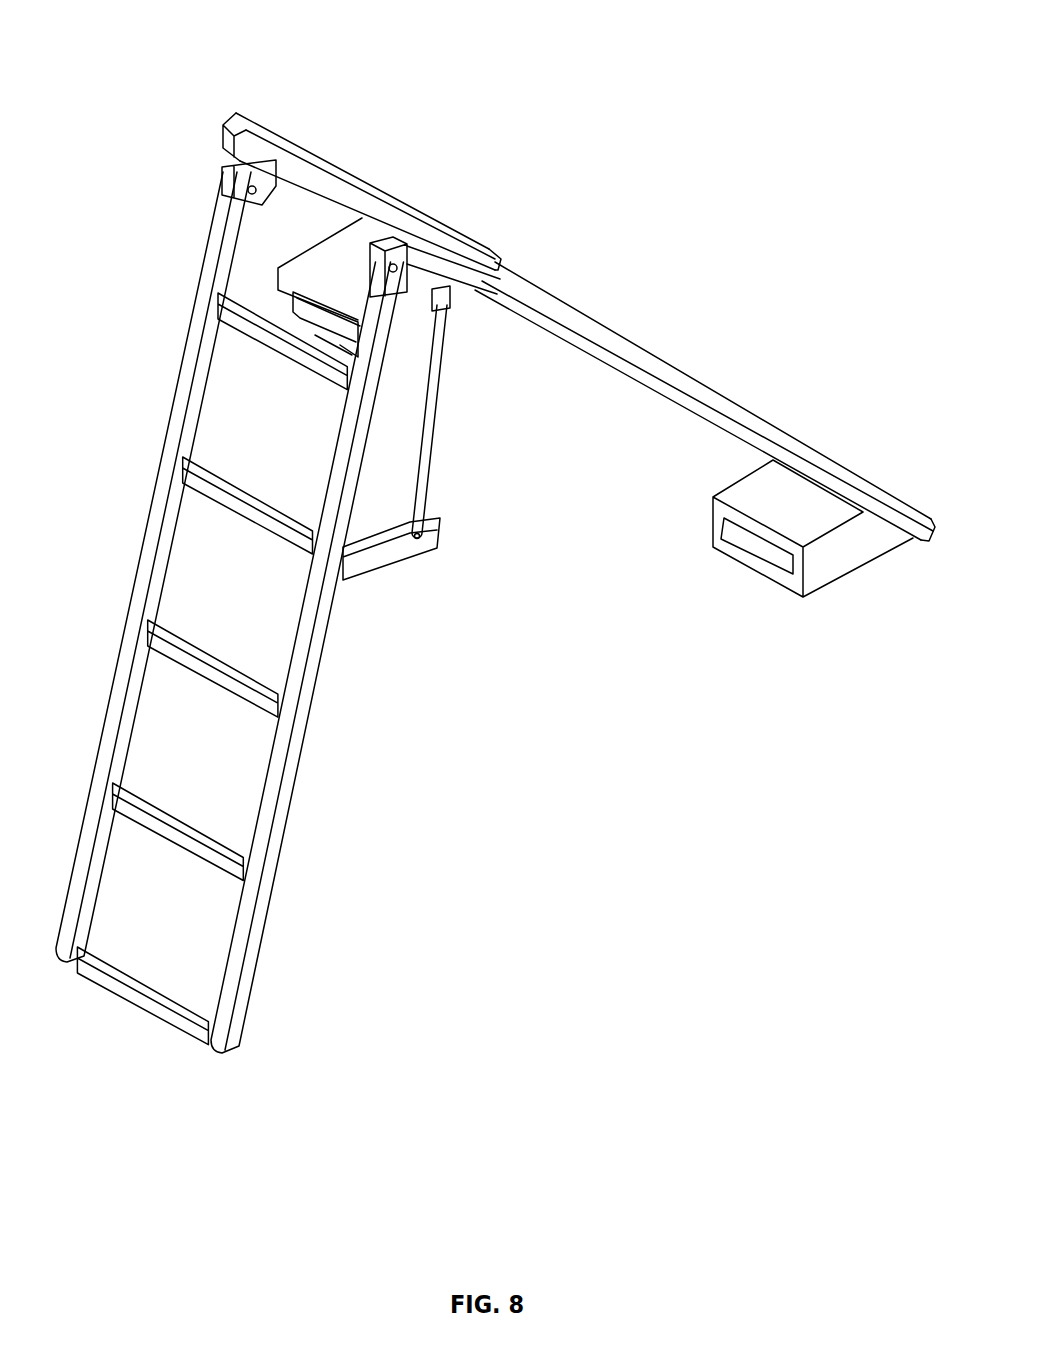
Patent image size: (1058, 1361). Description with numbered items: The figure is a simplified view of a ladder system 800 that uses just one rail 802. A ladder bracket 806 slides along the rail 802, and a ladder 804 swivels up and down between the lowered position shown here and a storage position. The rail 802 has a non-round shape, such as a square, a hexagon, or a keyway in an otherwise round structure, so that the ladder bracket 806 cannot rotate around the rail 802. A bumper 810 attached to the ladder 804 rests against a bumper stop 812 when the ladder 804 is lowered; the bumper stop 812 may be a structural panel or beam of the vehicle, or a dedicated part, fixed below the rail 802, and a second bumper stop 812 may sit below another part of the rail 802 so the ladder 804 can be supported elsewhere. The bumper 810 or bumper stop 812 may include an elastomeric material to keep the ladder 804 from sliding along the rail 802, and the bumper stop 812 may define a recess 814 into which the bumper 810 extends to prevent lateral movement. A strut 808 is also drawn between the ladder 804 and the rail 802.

The ladder system 800 is at (639, 68).
The rail 802 is at (667, 380).
The ladder 804 is at (142, 567).
The ladder bracket 806 is at (286, 142).
The strut 808 is at (423, 504).
The bumper 810 is at (290, 314).
The bumper stop 812 is at (332, 262).
The recess 814 is at (737, 537).